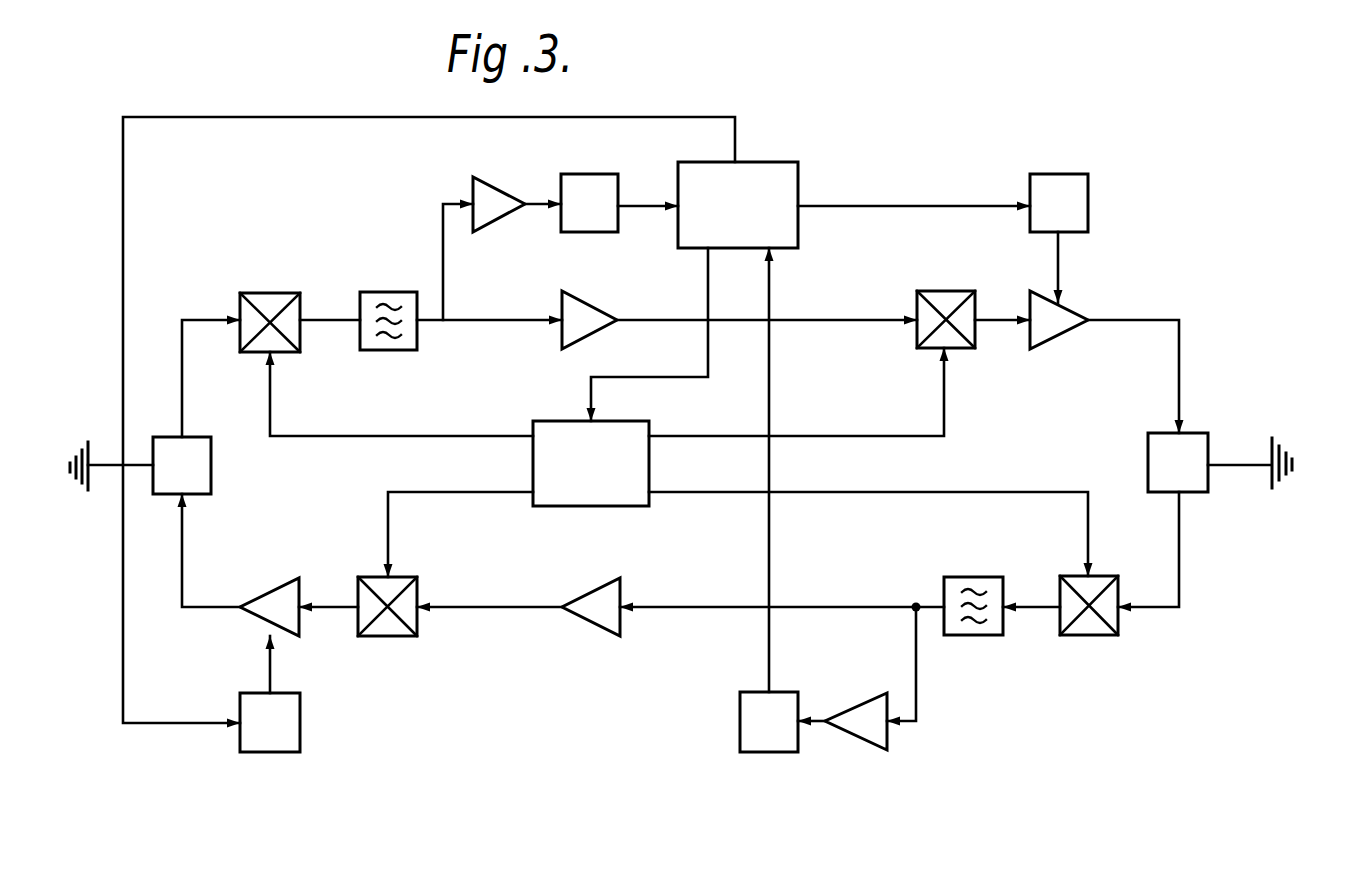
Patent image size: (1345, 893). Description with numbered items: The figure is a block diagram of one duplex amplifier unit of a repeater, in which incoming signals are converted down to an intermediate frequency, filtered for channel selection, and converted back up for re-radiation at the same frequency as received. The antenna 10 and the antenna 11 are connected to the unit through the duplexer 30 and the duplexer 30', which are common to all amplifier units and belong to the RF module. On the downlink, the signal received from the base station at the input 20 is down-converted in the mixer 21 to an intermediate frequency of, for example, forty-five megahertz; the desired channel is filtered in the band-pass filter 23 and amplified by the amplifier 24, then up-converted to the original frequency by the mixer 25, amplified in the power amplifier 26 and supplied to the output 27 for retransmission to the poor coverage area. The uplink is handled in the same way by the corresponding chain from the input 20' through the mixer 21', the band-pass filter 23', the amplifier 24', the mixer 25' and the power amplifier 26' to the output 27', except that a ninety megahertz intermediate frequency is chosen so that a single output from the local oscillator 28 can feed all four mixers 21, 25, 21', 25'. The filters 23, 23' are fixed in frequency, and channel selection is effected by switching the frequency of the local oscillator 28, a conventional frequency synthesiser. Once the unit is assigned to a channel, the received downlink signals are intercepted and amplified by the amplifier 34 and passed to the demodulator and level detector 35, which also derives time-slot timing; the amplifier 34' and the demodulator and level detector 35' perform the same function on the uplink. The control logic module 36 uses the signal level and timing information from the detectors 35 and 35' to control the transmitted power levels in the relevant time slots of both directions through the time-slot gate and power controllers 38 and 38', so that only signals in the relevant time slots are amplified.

The antenna 10 is at (78, 452).
The antenna 11 is at (1288, 446).
The input 20 is at (205, 358).
The input 20' is at (1175, 552).
The mixer 21 is at (270, 304).
The mixer 21' is at (1089, 632).
The band-pass filter 23 is at (388, 303).
The band-pass filter 23' is at (973, 633).
The amplifier 24 is at (589, 304).
The amplifier 24' is at (591, 626).
The mixer 25 is at (946, 301).
The mixer 25' is at (387, 633).
The power amplifier 26 is at (1066, 331).
The power amplifier 26' is at (265, 593).
The output 27 is at (1136, 352).
The output 27' is at (201, 576).
The local oscillator 28 is at (596, 483).
The duplexer 30 is at (206, 465).
The duplexer 30' is at (1154, 460).
The amplifier 34 is at (499, 182).
The amplifier 34' is at (856, 748).
The demodulator and level detector 35 is at (589, 182).
The demodulator and level detector 35' is at (769, 748).
The control logic module 36 is at (741, 220).
The time-slot gate and power controller 38 is at (1059, 182).
The time-slot gate and power controller 38' is at (270, 748).